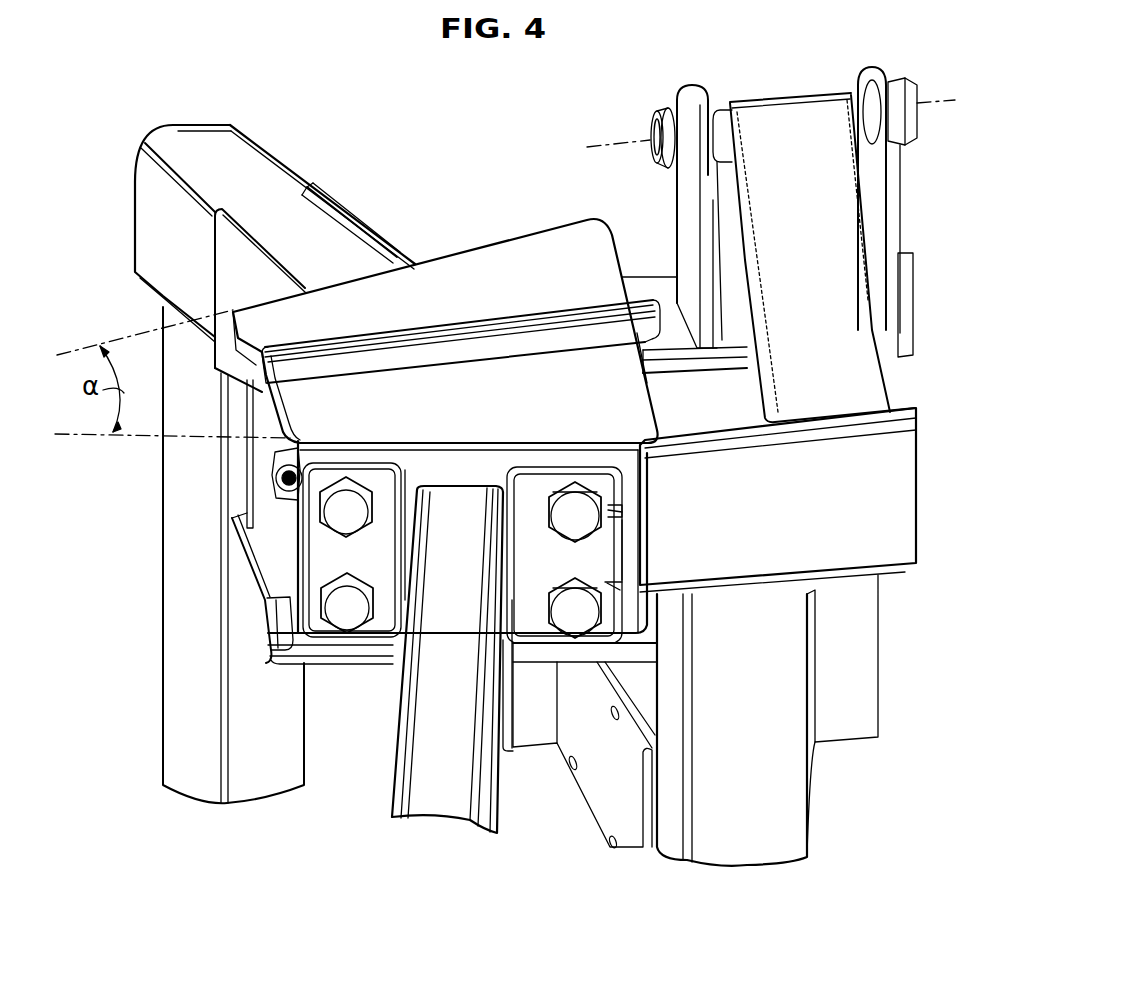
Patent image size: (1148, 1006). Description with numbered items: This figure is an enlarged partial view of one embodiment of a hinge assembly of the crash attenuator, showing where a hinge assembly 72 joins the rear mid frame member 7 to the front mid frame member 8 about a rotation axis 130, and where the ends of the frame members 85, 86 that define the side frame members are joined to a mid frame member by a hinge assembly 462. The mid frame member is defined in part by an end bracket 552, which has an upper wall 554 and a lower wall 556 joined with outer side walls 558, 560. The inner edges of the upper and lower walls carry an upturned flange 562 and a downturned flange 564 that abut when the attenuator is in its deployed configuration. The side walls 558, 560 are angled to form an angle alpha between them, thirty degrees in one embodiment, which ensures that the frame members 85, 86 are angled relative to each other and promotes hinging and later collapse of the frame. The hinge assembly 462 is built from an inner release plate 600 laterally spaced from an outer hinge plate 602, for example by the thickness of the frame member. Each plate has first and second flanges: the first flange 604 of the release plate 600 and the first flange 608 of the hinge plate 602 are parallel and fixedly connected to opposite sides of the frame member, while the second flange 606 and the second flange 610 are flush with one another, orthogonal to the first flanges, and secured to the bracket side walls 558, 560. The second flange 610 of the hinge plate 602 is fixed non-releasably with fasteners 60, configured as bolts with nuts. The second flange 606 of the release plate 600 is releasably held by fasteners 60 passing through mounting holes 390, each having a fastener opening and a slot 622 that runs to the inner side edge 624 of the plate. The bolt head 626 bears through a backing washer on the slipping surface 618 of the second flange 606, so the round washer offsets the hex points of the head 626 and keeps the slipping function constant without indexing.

The rear mid frame member 7 is at (890, 508).
The front mid frame member 8 is at (905, 304).
The fastener 60 is at (262, 563).
The hinge assembly 72 is at (848, 253).
The frame member 85 is at (445, 805).
The frame member 86 is at (256, 182).
The rotation axis 130 is at (917, 103).
The mounting hole 390 is at (628, 588).
The hinge assembly 462 is at (150, 602).
The end bracket 552 is at (188, 438).
The upper wall 554 is at (570, 375).
The lower wall 556 is at (266, 600).
The side wall 558 is at (232, 526).
The side wall 560 is at (450, 465).
The upturned flange 562 is at (402, 340).
The downturned flange 564 is at (277, 647).
The release plate 600 is at (357, 212).
The hinge plate 602 is at (223, 250).
The first flange 604 is at (513, 665).
The second flange 606 is at (548, 478).
The first flange 608 is at (407, 540).
The second flange 610 is at (316, 473).
The slipping surface 618 is at (607, 497).
The slot 622 is at (605, 582).
The inner side edge 624 is at (620, 550).
The head 626 is at (511, 404).